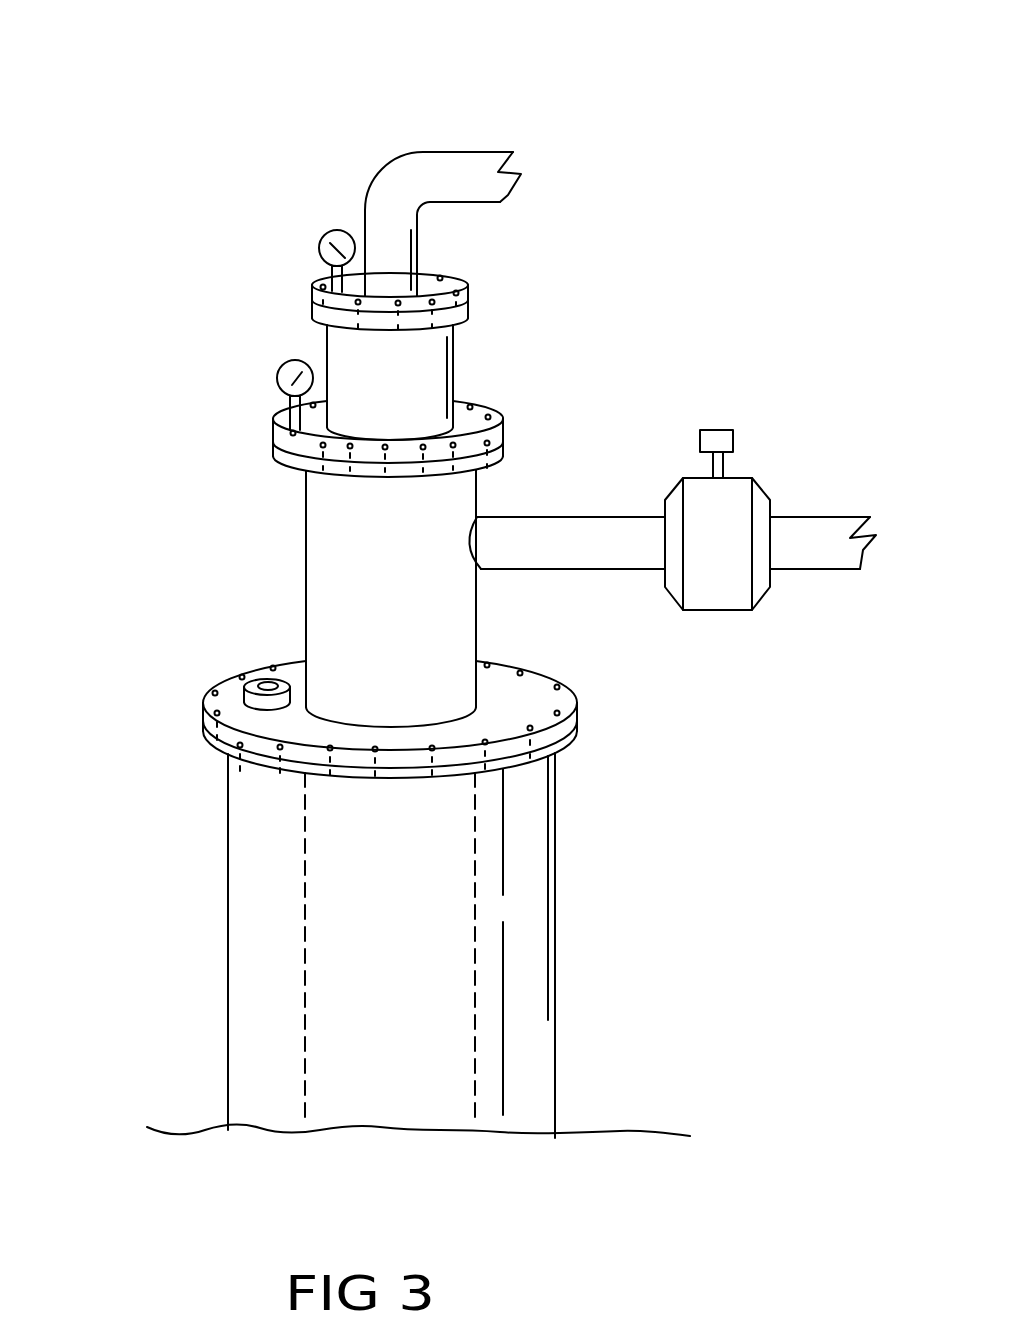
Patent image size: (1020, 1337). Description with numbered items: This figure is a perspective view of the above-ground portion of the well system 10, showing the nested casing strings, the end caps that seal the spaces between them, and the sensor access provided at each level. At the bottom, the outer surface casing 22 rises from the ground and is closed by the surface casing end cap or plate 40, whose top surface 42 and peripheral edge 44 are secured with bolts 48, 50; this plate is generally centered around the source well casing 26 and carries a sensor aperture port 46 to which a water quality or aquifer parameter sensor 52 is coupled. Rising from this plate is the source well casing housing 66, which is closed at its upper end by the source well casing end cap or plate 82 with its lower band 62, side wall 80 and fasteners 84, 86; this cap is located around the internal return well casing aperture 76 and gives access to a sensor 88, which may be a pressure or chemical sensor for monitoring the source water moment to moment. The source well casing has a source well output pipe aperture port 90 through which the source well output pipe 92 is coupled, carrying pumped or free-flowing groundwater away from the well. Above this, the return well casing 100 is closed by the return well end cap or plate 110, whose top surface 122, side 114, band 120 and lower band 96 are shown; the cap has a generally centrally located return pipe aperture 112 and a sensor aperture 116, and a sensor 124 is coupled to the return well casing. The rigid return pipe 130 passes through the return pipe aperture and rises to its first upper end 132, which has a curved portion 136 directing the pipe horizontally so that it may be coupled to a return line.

The well system 10 is at (168, 150).
The outer casing 22 is at (212, 744).
The inner pipe 26 is at (555, 816).
The surface casing end cap or plate 40 is at (502, 673).
The flange top surface 42 is at (543, 677).
The flange peripheral edge 44 is at (573, 733).
The sensor aperture port 46 is at (247, 702).
The flange bolt 48 is at (568, 712).
The bolts 50 is at (496, 735).
The water quality or aquifer parameter sensor 52 is at (270, 685).
The flange lower band 62 is at (500, 454).
The cylindrical housing 66 is at (322, 477).
The internal return well casing aperture 76 is at (488, 414).
The flange side wall 80 is at (503, 421).
The sensor aperture port 82 is at (279, 421).
The flange bolts 84 is at (283, 457).
The flange bolt 86 is at (472, 402).
The sensor 88 is at (278, 375).
The source well output pipe aperture port 90 is at (370, 447).
The source well output pipe 92 is at (613, 536).
The upper flange lower band 96 is at (465, 320).
The upper housing 100 is at (320, 322).
The return well end cap or plate 110 is at (440, 278).
The return pipe aperture 112 is at (364, 214).
The upper flange side 114 is at (466, 290).
The sensor aperture 116 is at (318, 281).
The upper flange band 120 is at (468, 305).
The upper flange top surface 122 is at (460, 278).
The sensor 124 is at (330, 237).
The return pipe 130 is at (393, 245).
The first upper end 132 is at (482, 152).
The curved portion 136 is at (403, 167).